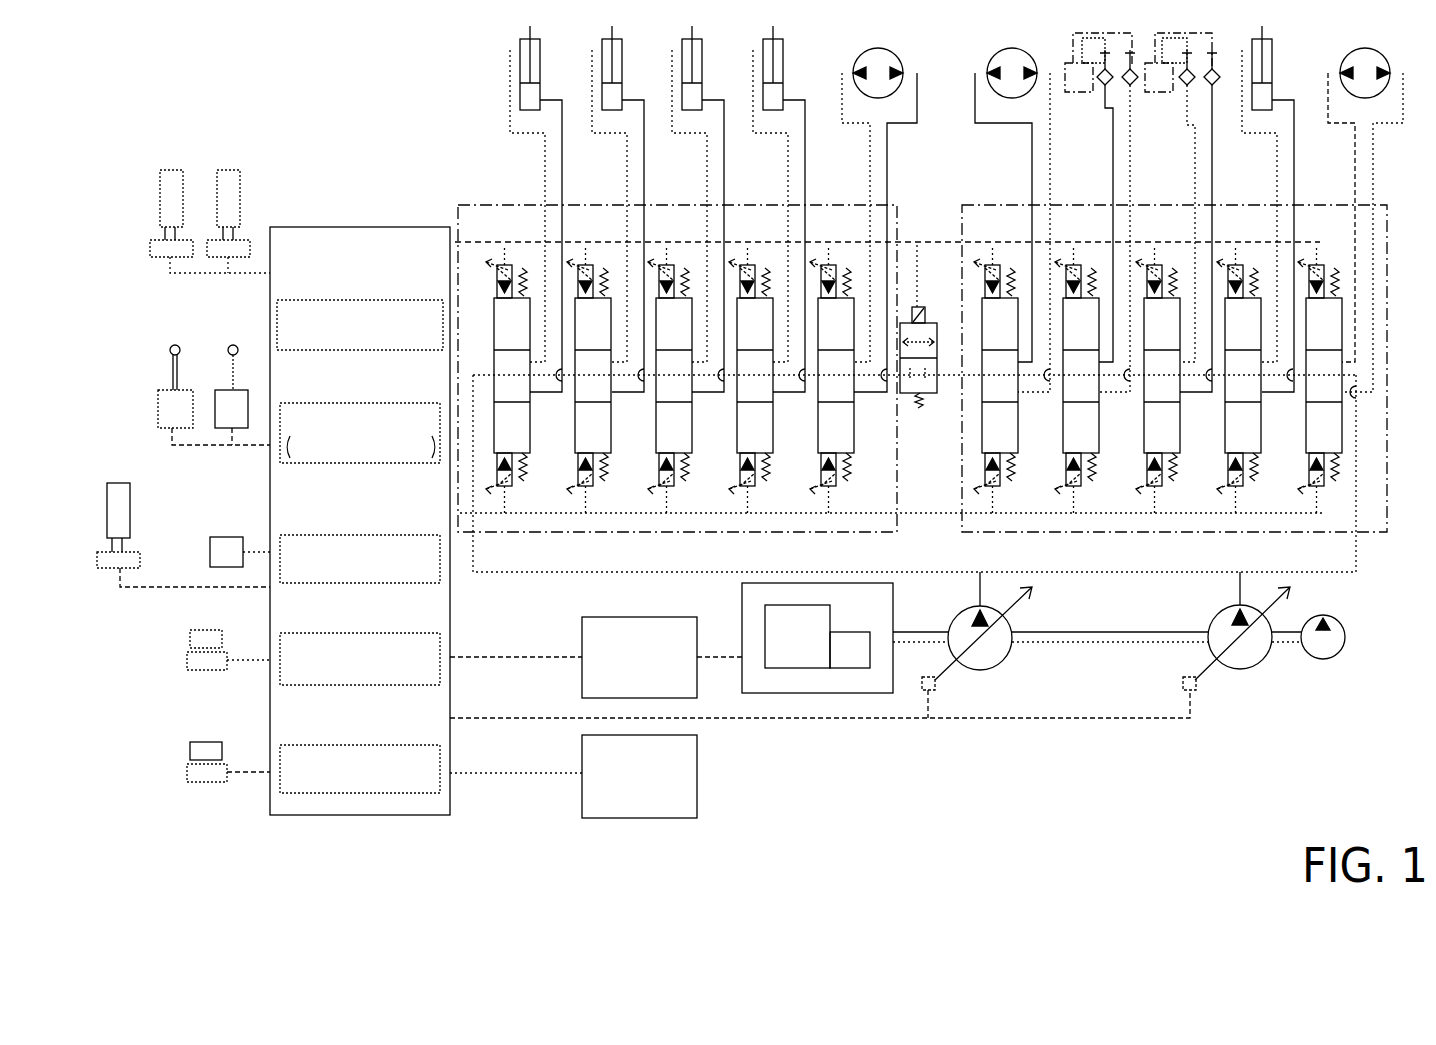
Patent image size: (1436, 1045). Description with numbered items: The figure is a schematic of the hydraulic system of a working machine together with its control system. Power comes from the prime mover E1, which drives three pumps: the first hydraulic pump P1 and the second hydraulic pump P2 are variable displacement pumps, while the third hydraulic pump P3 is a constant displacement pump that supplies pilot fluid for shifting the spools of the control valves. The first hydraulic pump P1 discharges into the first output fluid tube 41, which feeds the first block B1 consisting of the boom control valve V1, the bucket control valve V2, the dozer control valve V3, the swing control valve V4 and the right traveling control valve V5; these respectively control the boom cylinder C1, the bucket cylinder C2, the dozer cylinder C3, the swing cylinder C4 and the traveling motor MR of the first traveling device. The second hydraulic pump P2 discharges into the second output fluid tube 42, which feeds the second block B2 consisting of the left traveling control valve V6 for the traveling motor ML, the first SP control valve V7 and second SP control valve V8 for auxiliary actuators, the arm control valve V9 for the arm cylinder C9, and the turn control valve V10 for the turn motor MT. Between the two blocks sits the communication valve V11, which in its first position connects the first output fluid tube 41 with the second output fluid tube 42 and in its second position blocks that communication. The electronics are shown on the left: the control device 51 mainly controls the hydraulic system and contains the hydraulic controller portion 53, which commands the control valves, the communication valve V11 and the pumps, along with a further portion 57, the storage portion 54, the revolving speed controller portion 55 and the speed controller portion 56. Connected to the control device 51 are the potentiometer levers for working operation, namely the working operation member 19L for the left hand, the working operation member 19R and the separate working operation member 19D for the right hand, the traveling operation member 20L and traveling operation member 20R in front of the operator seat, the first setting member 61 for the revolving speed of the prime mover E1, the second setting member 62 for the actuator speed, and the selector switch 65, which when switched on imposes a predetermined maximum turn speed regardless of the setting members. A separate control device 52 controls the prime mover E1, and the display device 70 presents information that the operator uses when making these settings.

The working operation member 19L is at (172, 170).
The working operation member 19R is at (230, 170).
The traveling operation member 20L is at (172, 350).
The traveling operation member 20R is at (237, 350).
The working operation member 19D is at (107, 512).
The selector switch 65 is at (210, 552).
The first setting member 61 is at (190, 640).
The second setting member 62 is at (190, 752).
The control device 51 is at (412, 227).
The hydraulic controller portion 53 is at (413, 300).
The switch portion (mode switching portion) 57 is at (413, 403).
The storage portion 54 is at (413, 535).
The revolving speed controller portion 55 is at (413, 633).
The speed controller portion 56 is at (413, 745).
The control device 52 is at (610, 617).
The display device 70 is at (697, 773).
The prime mover E1 is at (798, 668).
The first hydraulic pump P1 is at (1010, 655).
The second hydraulic pump P2 is at (1262, 662).
The third hydraulic pump P3 is at (1343, 652).
The first output fluid tube 41 is at (523, 572).
The second output fluid tube 42 is at (1357, 552).
The first block B1 is at (905, 215).
The second block B2 is at (1388, 215).
The boom control valve V1 is at (525, 322).
The bucket control valve V2 is at (606, 322).
The dozer control valve V3 is at (687, 322).
The swing control valve V4 is at (768, 322).
The right traveling control valve V5 is at (849, 322).
The left traveling control valve V6 is at (1013, 322).
The first SP control valve V7 is at (1094, 322).
The second SP control valve V8 is at (1175, 322).
The arm control valve V9 is at (1256, 322).
The turn control valve V10 is at (1337, 322).
The communication valve V11 is at (920, 412).
The boom cylinder C1 is at (540, 48).
The bucket cylinder C2 is at (622, 48).
The dozer cylinder C3 is at (702, 48).
The swing cylinder C4 is at (783, 48).
The arm cylinder C9 is at (1270, 52).
The traveling motor MR is at (892, 60).
The traveling motor ML is at (1025, 57).
The turn motor MT is at (1383, 58).